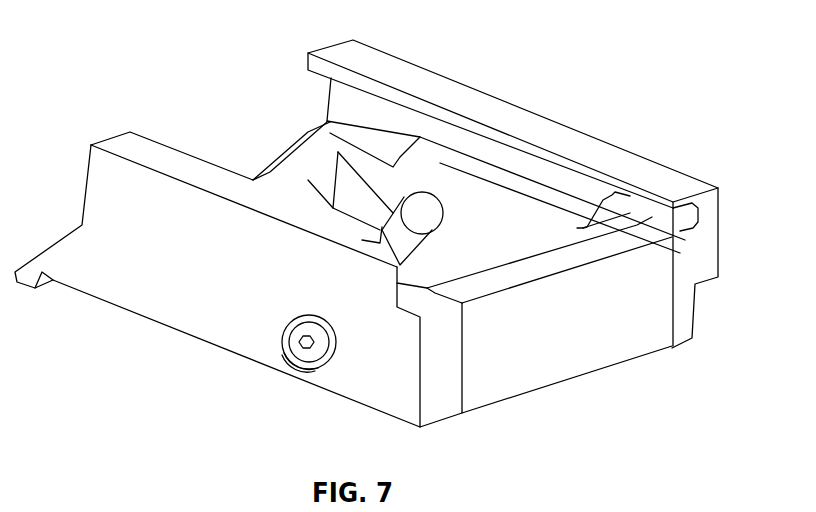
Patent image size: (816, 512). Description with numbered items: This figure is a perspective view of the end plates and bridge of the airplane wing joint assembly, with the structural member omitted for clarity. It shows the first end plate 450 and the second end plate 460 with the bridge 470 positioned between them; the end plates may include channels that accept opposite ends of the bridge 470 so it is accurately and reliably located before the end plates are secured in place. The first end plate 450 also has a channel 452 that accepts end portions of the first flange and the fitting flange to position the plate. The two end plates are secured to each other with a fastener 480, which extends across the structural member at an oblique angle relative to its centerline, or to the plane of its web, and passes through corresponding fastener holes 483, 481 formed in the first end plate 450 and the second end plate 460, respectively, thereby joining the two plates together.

The first end plate 450 is at (437, 93).
The channel 452 is at (688, 245).
The second end plate 460 is at (207, 300).
The bridge 470 is at (503, 366).
The end plate fastener 480 is at (395, 228).
The fastener hole 481 is at (345, 365).
The fastener hole 483 is at (441, 188).